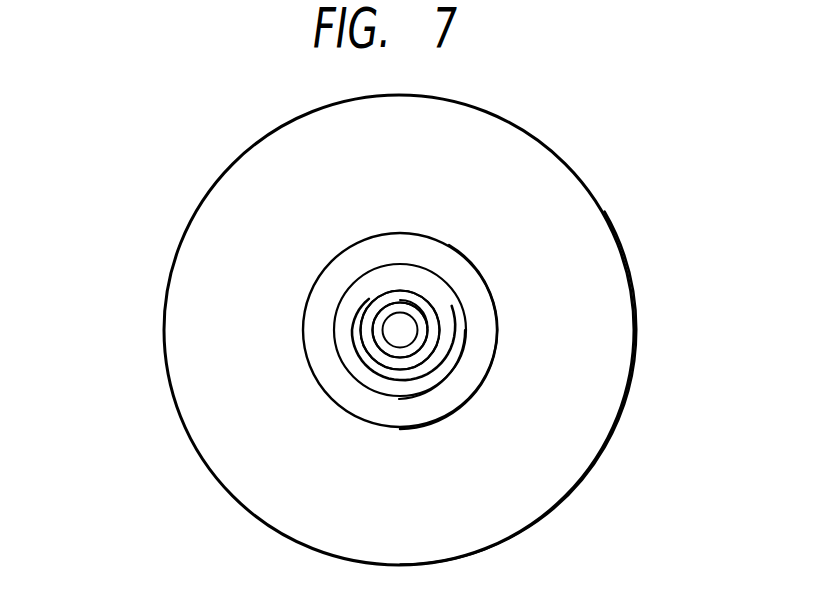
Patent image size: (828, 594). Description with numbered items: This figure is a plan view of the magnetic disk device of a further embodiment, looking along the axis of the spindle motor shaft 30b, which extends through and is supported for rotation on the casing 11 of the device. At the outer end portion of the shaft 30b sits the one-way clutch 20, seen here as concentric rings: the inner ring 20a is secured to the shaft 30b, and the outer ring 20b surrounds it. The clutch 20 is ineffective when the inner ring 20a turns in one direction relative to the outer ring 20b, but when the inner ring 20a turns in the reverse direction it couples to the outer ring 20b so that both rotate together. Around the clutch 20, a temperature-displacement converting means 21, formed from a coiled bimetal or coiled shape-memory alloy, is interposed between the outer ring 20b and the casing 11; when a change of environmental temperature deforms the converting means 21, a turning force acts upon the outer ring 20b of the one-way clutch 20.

The casing 11 is at (573, 207).
The one-way clutch 20 is at (103, 297).
The inner ring 20a is at (372, 322).
The outer ring 20b is at (366, 342).
The temperature-displacement converting means 21 is at (462, 336).
The shaft 30b is at (400, 322).